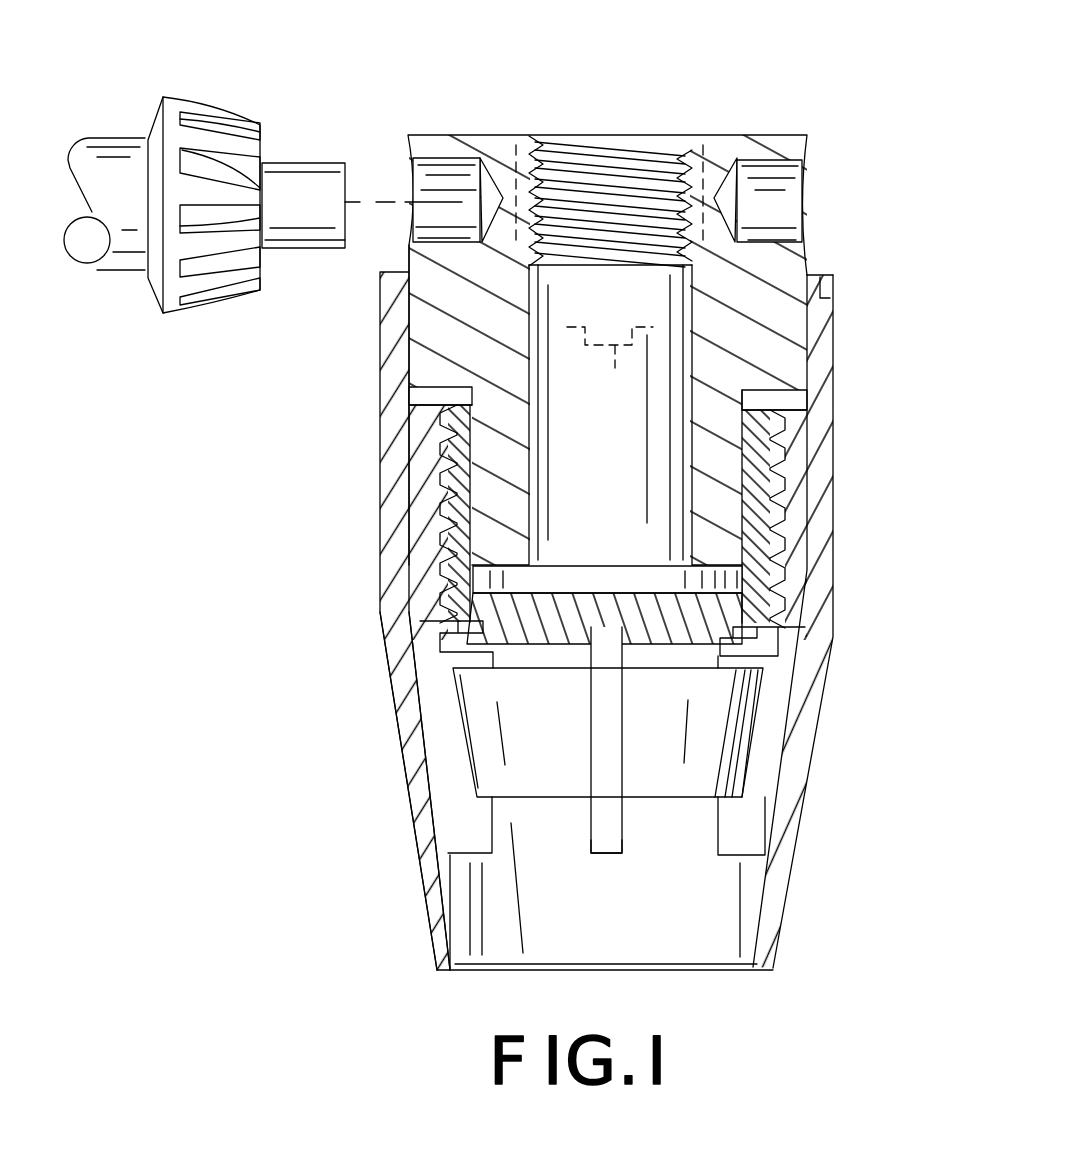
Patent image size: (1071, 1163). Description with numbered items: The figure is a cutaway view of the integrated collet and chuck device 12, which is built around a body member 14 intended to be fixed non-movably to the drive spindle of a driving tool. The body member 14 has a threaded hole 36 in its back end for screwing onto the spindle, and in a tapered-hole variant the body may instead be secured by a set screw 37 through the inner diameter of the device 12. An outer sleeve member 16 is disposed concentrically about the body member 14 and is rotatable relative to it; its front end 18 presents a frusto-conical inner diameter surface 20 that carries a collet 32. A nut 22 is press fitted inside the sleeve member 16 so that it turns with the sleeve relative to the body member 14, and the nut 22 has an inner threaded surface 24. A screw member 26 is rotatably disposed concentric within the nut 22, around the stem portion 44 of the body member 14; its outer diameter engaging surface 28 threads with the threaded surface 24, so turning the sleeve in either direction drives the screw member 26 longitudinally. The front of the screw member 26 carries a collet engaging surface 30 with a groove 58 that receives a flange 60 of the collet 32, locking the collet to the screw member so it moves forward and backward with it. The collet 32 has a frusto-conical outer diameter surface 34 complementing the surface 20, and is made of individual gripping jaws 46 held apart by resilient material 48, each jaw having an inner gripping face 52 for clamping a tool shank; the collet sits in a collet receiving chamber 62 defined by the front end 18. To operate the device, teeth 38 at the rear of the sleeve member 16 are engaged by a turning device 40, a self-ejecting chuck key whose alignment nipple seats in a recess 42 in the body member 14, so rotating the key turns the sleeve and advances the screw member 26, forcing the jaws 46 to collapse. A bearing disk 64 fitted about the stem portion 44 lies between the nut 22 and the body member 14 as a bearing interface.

The integrated collet and chuck device 12 is at (836, 60).
The body member 14 is at (773, 277).
The outer sleeve member 16 is at (834, 474).
The front end 18 is at (412, 842).
The frusto-conical inner diameter surface 20 is at (437, 768).
The nut 22 is at (425, 528).
The threaded surface 24 is at (430, 435).
The screw member 26 is at (768, 566).
The outer diameter engaging surface 28 is at (438, 601).
The collet engaging surface 30 is at (660, 650).
The collet 32 is at (716, 747).
The frusto-conical outer diameter surface 34 is at (455, 711).
The threaded hole 36 is at (627, 160).
The set screw 37 is at (610, 370).
The teeth 38 is at (833, 290).
The turning device 40 is at (100, 308).
The recess 42 is at (413, 225).
The stem portion 44 is at (724, 441).
The gripping jaws 46 is at (607, 855).
The resilient material 48 is at (575, 754).
The inner gripping face 52 is at (718, 834).
The groove 58 is at (440, 651).
The flange 60 is at (788, 626).
The collet receiving chamber 62 is at (493, 887).
The bearing disk 64 is at (408, 386).